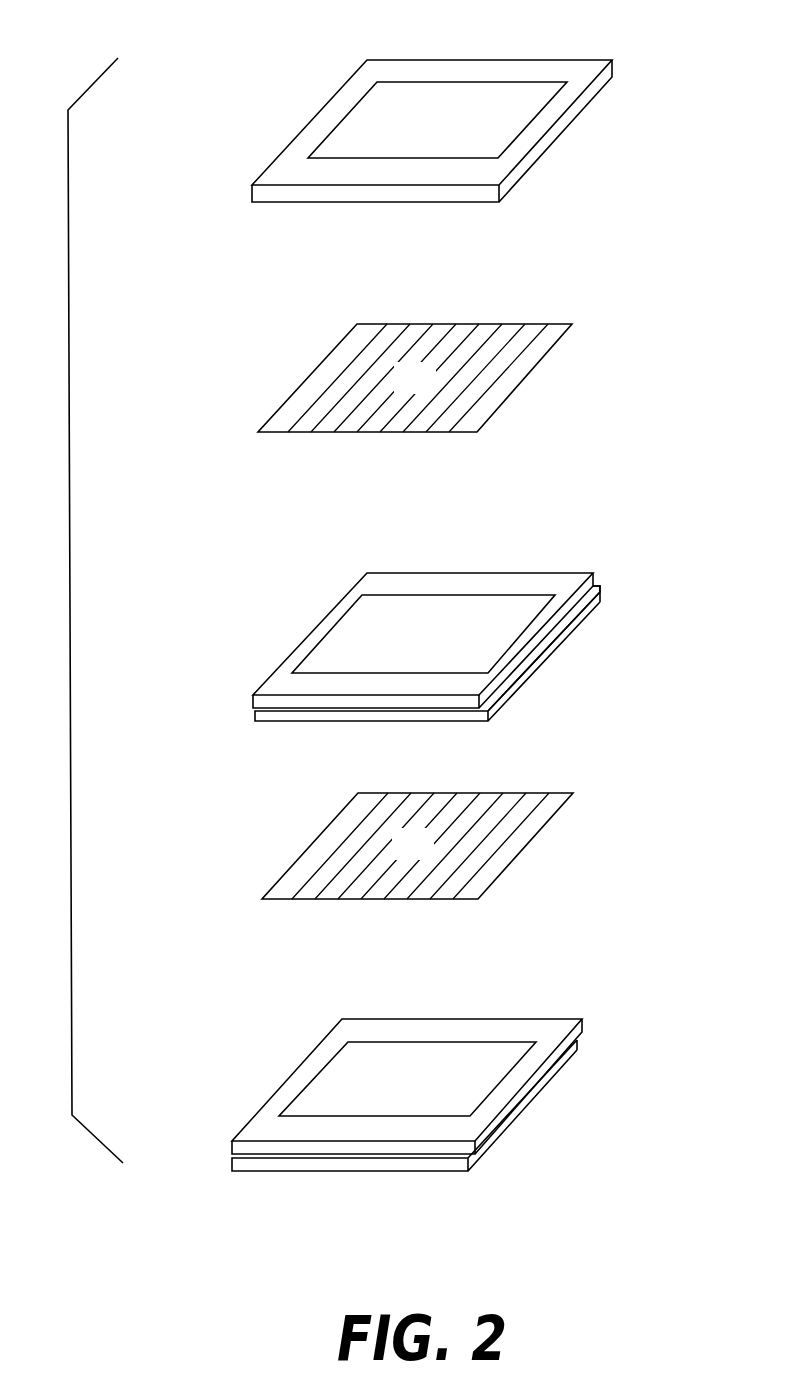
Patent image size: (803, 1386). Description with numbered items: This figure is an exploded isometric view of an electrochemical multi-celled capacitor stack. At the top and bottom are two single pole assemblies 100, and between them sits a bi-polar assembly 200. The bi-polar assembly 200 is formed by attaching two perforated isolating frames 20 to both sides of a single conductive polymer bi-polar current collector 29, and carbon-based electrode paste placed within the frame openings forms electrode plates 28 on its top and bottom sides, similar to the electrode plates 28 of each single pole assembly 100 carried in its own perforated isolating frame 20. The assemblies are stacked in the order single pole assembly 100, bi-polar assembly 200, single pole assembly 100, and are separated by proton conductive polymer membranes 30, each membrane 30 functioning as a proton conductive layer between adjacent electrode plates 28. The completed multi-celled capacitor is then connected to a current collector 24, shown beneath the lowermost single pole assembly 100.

The single pole assembly 100 is at (265, 79).
The bi-polar assembly 200 is at (275, 590).
The perforated isolating frame 20 is at (568, 118).
The electrode plate 28 is at (425, 95).
The conductive polymer bi-polar current collector 29 is at (555, 635).
The proton conductive polymer membrane 30 is at (400, 391).
The current collector 24 is at (380, 1172).